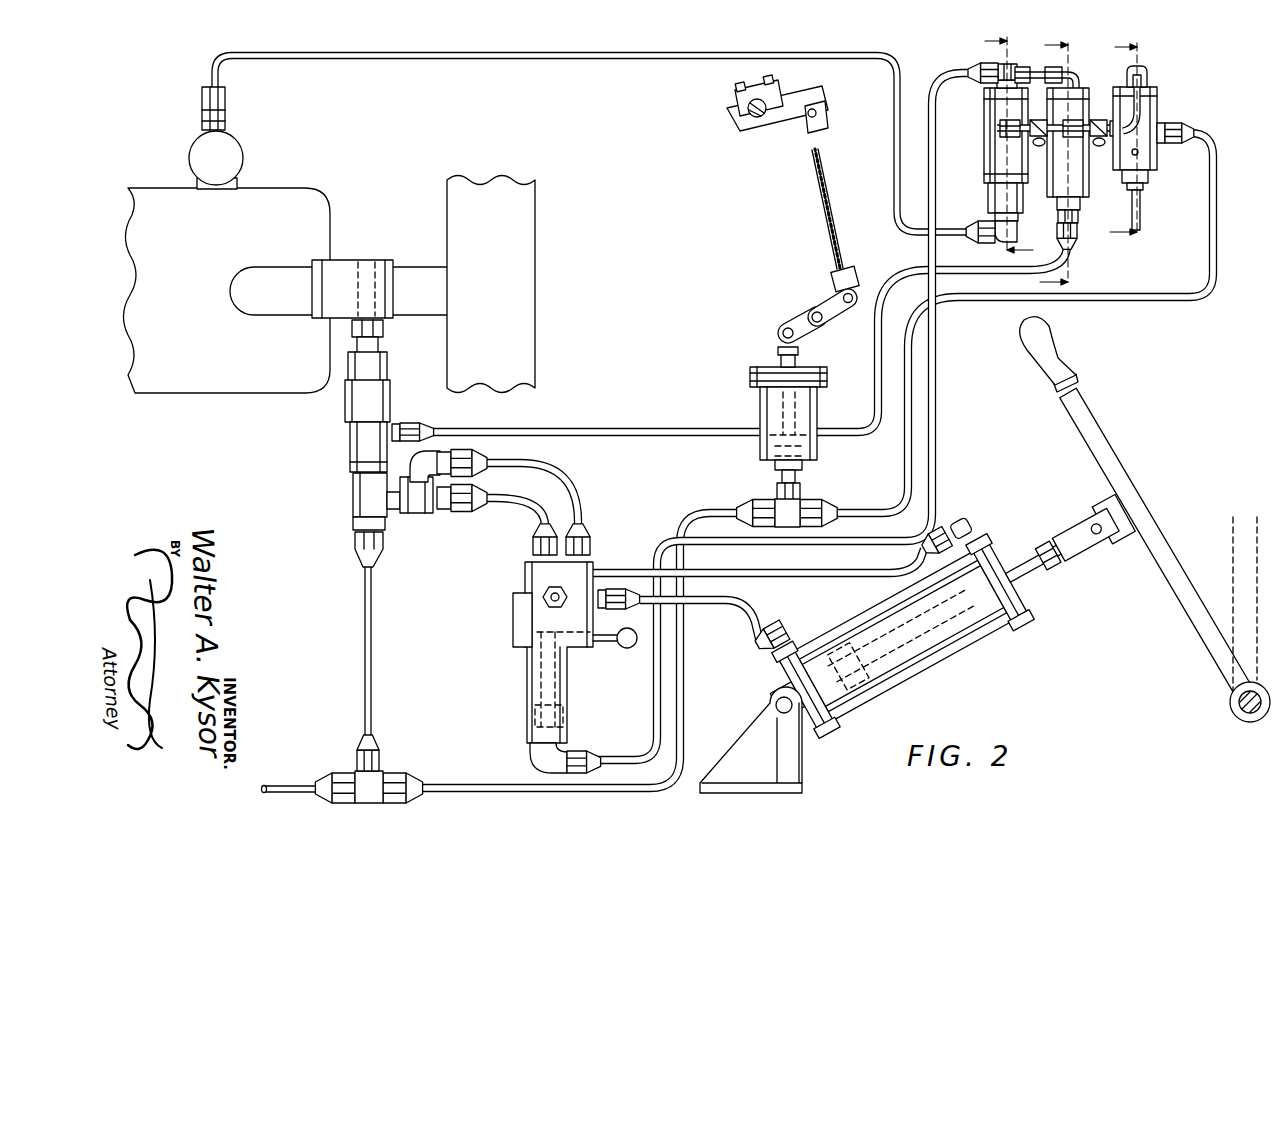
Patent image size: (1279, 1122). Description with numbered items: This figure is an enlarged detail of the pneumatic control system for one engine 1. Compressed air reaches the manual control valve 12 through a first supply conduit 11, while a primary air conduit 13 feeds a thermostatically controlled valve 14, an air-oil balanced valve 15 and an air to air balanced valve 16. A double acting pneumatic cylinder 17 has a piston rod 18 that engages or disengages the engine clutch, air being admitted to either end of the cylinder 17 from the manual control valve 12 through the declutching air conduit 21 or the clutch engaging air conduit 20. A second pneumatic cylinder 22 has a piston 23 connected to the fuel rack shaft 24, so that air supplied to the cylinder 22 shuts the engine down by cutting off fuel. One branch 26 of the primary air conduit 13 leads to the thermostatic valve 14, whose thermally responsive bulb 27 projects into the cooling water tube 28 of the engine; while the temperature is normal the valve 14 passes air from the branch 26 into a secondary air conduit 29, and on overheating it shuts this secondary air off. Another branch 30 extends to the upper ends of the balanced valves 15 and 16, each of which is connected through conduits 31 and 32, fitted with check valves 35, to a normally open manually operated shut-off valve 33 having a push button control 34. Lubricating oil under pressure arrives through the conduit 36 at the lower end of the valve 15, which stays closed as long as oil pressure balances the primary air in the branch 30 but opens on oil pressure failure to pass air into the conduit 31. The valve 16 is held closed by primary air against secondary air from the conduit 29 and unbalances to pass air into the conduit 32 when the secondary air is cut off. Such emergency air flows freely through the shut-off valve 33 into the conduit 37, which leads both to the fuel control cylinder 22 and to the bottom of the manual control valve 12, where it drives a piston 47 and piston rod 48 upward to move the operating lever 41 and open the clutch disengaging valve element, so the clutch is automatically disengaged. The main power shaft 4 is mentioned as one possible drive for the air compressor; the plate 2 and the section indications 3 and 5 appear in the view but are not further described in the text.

The engine 1 is at (282, 203).
The dash panel 2 is at (528, 218).
The section line 3 is at (1042, 163).
The main power shaft 4 is at (1111, 138).
The section line 5 is at (1009, 146).
The first supply conduit 11 is at (547, 503).
The manual control valve 12 is at (524, 660).
The primary air conduit 13 is at (290, 794).
The thermostatically controlled valve 14 is at (349, 434).
The air-oil balanced valve 15 is at (986, 154).
The air to air balanced valve 16 is at (1059, 197).
The double acting pneumatic cylinder 17 is at (913, 665).
The piston rod 18 is at (1045, 557).
The clutch engaging air conduit 20 is at (736, 606).
The declutching air conduit 21 is at (815, 576).
The pneumatic cylinder 22 is at (770, 400).
The piston 23 is at (780, 362).
The fuel rack shaft 24 is at (744, 128).
The branch 26 is at (362, 602).
The thermally responsive bulb 27 is at (372, 275).
The cooling water tube 28 is at (417, 283).
The secondary air conduit 29 is at (549, 428).
The branch 30 is at (451, 786).
The conduit 31 is at (999, 132).
The conduit 32 is at (1140, 117).
The shut-off valve 33 is at (1150, 82).
The push button control 34 is at (1139, 190).
The check valve 35 is at (1040, 135).
The conduit 36 is at (521, 62).
The emergency air conduit 37 is at (858, 509).
The operating lever 41 is at (605, 641).
The piston 47 is at (540, 727).
The piston rod 48 is at (556, 680).